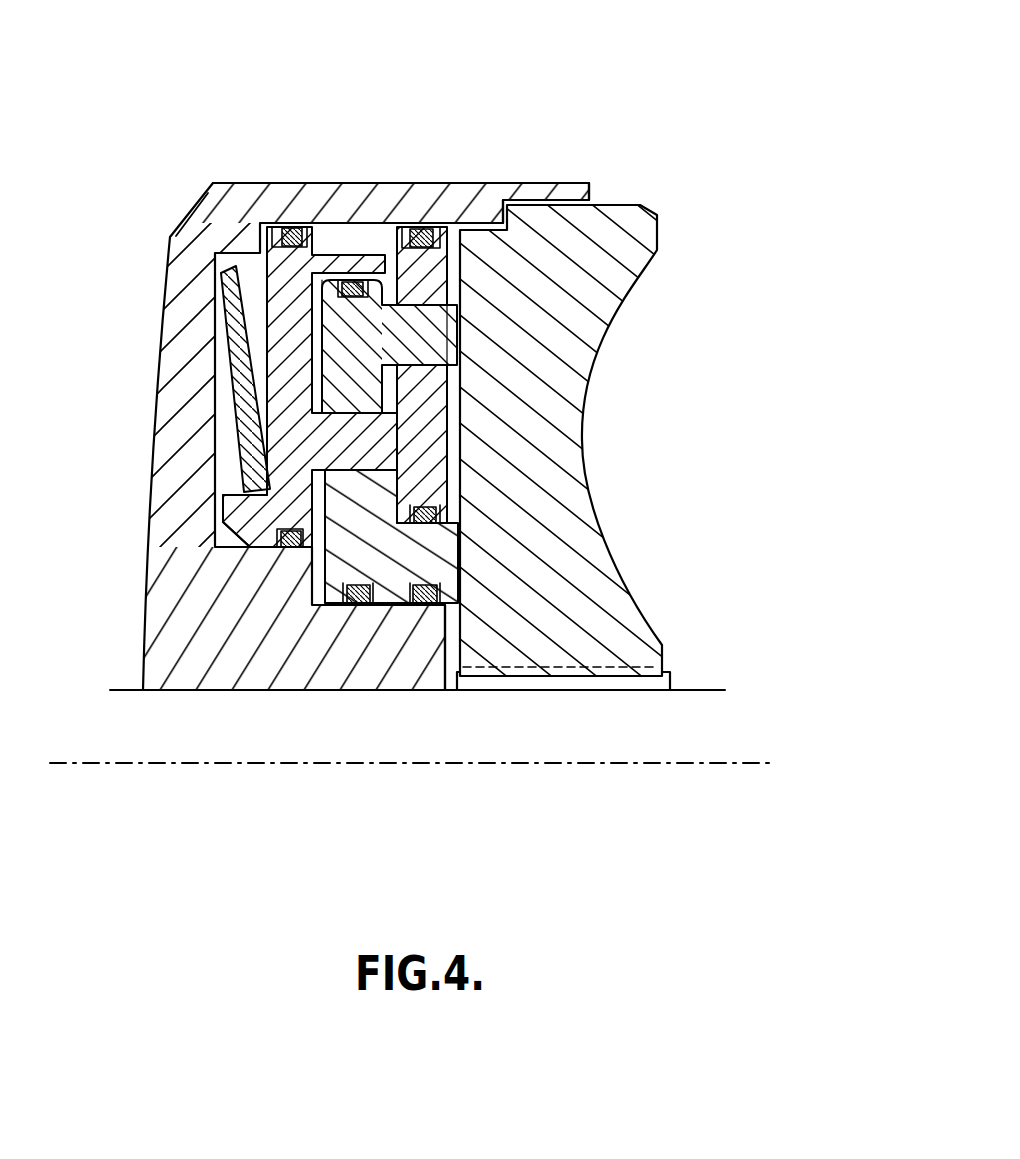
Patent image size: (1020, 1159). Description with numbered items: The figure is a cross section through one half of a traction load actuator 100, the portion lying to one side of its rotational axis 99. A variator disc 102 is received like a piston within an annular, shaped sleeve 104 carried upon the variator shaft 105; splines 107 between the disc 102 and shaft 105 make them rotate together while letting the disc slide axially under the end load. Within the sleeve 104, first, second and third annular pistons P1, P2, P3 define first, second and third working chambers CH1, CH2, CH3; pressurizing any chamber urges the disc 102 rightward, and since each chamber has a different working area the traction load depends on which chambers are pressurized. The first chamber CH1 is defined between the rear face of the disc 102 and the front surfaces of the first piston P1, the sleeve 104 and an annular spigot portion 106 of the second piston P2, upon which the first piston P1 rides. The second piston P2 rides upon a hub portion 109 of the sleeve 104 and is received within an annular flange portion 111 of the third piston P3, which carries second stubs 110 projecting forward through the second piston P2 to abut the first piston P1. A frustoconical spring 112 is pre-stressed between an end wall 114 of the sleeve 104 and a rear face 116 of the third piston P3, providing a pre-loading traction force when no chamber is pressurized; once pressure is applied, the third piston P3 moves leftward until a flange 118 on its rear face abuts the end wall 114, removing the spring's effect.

The traction load actuator 100 is at (567, 125).
The variator disc 102 is at (592, 437).
The annular shaped sleeve 104 is at (590, 185).
The variator shaft 105 is at (496, 743).
The annular spigot portion 106 is at (386, 588).
The splines 107 is at (673, 678).
The hub portion 109 is at (386, 500).
The second stubs 110 is at (317, 276).
The annular flange portion 111 is at (370, 253).
The frustoconical spring 112 is at (245, 392).
The end wall 114 is at (170, 390).
The rear face 116 is at (170, 234).
The flange 118 is at (260, 547).
The rotational axis 99 is at (513, 763).
The first annular piston P1 is at (404, 224).
The second annular piston P2 is at (343, 277).
The third annular piston P3 is at (280, 228).
The first working chamber CH1 is at (455, 250).
The second working chamber CH2 is at (300, 318).
The third working chamber CH3 is at (316, 600).